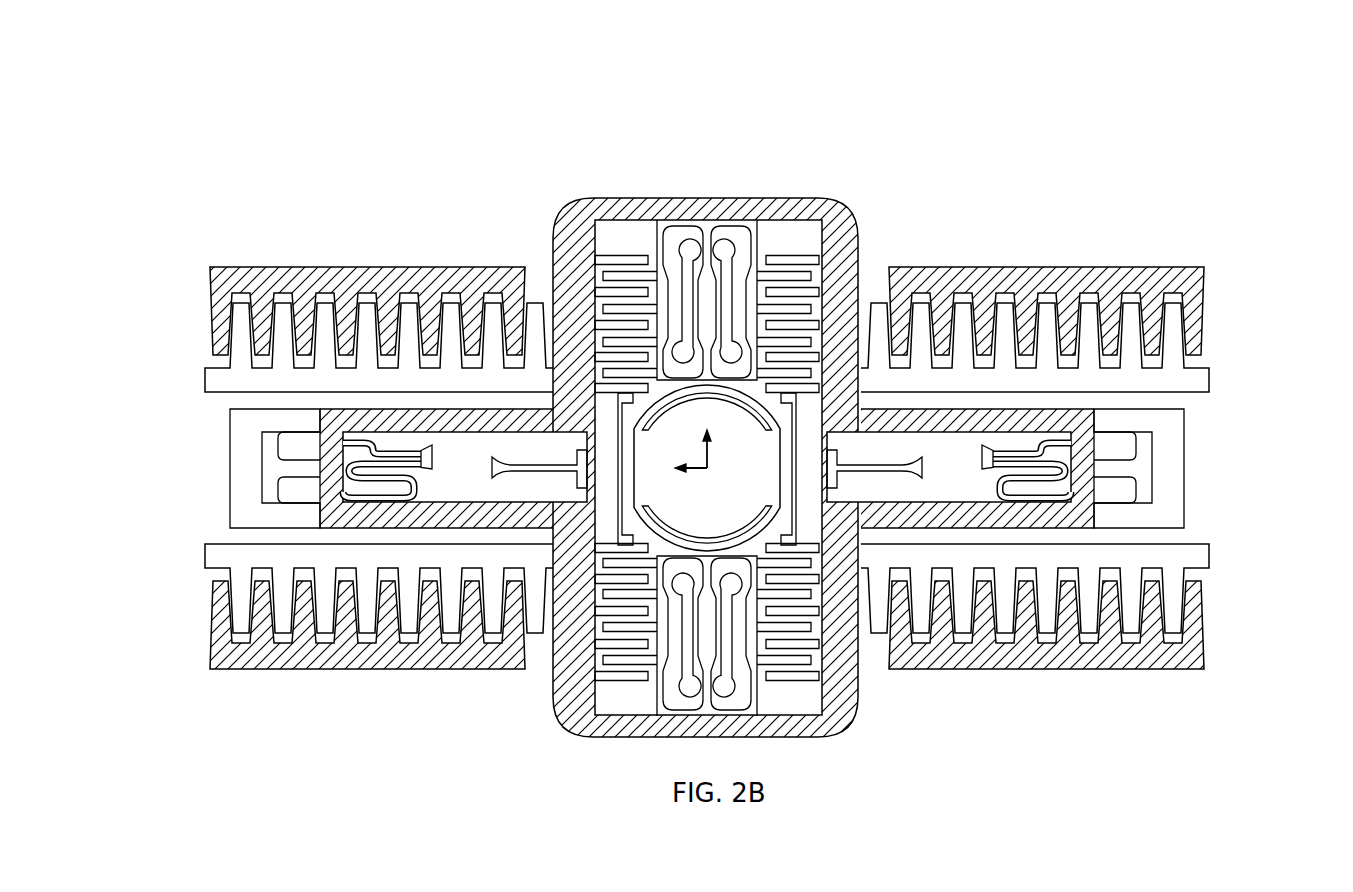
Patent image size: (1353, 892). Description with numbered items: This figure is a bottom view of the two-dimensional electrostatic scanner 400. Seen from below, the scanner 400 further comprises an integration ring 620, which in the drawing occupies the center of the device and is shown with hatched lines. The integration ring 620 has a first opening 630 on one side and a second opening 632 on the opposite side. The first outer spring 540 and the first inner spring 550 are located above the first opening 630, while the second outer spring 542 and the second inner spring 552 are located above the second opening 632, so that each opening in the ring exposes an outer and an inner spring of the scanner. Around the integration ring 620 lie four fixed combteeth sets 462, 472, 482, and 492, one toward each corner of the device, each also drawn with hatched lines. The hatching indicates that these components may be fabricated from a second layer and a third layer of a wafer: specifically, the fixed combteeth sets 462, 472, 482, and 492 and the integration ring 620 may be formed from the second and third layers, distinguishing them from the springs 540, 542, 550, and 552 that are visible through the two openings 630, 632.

The two-dimensional electrostatic scanner 400 is at (333, 127).
The fixed combteeth set 462 is at (207, 330).
The fixed combteeth set 472 is at (1207, 330).
The fixed combteeth set 482 is at (1207, 606).
The fixed combteeth set 492 is at (207, 606).
The first outer spring 540 is at (360, 443).
The second outer spring 542 is at (1055, 443).
The first inner spring 550 is at (540, 466).
The second inner spring 552 is at (876, 466).
The integration ring 620 is at (840, 300).
The first opening 630 is at (462, 473).
The second opening 632 is at (952, 473).